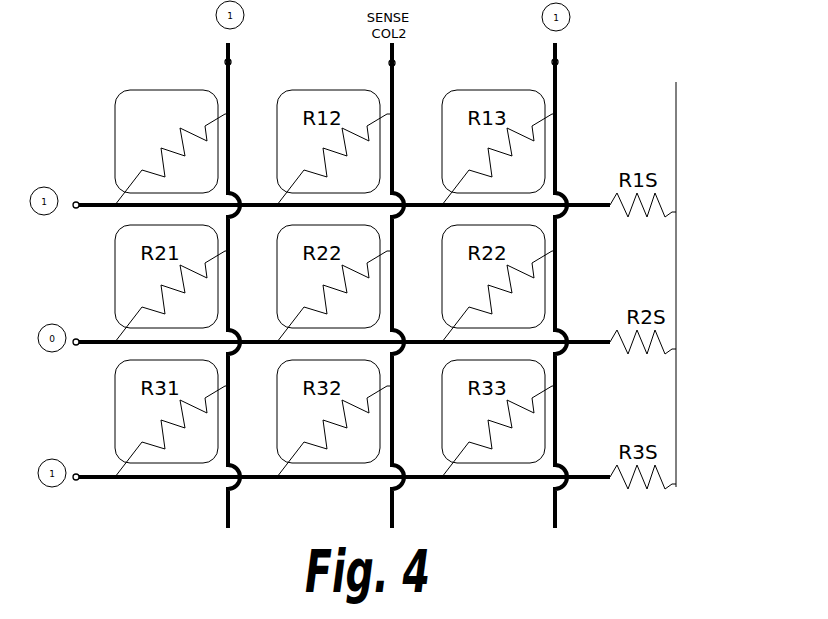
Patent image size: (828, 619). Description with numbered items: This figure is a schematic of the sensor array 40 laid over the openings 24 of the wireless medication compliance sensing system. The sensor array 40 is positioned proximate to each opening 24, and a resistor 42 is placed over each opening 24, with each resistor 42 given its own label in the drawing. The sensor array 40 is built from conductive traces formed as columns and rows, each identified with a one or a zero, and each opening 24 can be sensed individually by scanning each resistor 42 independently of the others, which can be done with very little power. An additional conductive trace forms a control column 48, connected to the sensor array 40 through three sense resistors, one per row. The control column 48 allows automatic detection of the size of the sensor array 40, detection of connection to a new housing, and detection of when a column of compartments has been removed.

The opening 24 is at (127, 102).
The resistor 42 is at (213, 120).
The sensor array 40 is at (557, 52).
The control column 48 is at (676, 150).